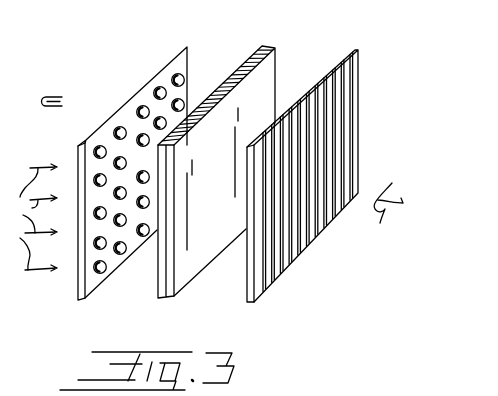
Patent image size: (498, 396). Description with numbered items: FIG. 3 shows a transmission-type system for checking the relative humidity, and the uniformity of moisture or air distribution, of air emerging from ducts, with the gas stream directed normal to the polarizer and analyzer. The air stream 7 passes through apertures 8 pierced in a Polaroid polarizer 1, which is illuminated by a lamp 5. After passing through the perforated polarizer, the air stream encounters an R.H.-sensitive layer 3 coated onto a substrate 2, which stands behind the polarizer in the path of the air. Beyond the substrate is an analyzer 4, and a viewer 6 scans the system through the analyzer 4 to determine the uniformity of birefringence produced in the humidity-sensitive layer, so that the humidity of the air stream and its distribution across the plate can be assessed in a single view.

The Polaroid polarizer 1 is at (186, 46).
The substrate 2 is at (229, 153).
The R.H.-sensitive layer 3 is at (259, 51).
The analyzer 4 is at (354, 51).
The lamp 5 is at (65, 102).
The viewer 6 is at (392, 184).
The air stream 7 is at (33, 217).
The apertures 8 is at (118, 128).